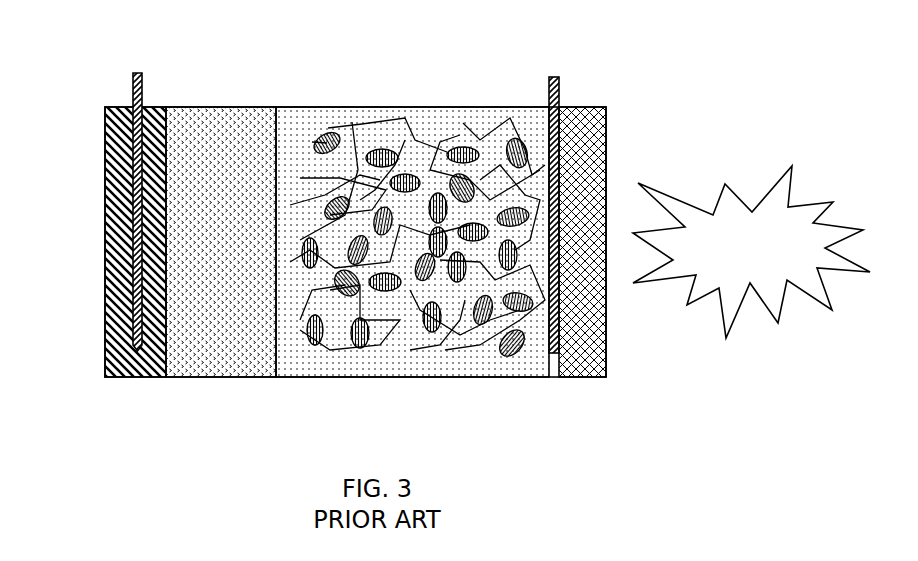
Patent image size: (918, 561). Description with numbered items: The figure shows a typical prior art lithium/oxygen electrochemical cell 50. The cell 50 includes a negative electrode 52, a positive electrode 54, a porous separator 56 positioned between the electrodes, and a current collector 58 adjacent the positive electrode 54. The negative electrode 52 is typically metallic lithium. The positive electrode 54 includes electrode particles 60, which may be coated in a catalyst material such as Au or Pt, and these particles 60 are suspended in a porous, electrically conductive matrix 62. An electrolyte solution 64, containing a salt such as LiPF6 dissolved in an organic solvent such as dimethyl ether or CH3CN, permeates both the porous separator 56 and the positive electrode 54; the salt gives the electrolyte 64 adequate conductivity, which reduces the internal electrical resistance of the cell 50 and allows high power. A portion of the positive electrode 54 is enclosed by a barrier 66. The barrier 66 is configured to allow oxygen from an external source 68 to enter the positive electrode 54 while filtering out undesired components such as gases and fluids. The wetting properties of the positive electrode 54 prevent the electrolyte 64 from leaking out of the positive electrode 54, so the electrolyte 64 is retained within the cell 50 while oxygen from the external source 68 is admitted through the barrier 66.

The lithium/oxygen electrochemical cell 50 is at (144, 50).
The negative electrode 52 is at (105, 197).
The positive electrode 54 is at (506, 377).
The porous separator 56 is at (205, 377).
The current collector 58 is at (560, 92).
The electrode particles 60 is at (333, 132).
The porous, electrically conductive matrix 62 is at (447, 152).
The electrolyte solution 64 is at (412, 352).
The barrier 66 is at (607, 120).
The external source 68 is at (793, 178).